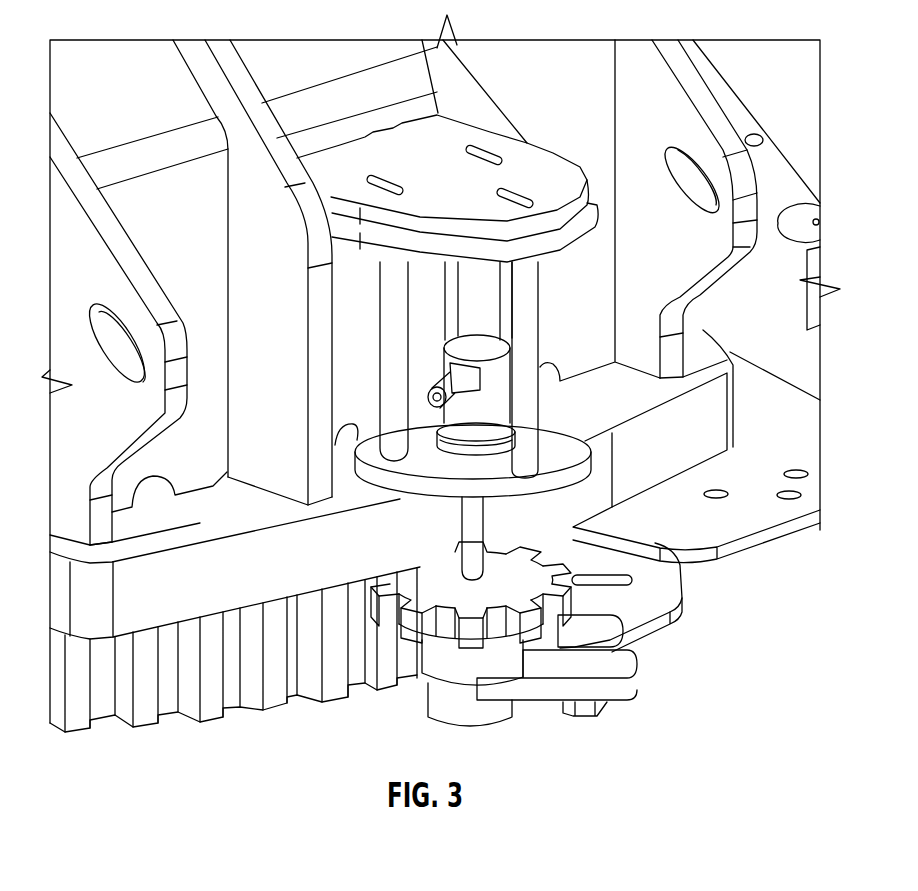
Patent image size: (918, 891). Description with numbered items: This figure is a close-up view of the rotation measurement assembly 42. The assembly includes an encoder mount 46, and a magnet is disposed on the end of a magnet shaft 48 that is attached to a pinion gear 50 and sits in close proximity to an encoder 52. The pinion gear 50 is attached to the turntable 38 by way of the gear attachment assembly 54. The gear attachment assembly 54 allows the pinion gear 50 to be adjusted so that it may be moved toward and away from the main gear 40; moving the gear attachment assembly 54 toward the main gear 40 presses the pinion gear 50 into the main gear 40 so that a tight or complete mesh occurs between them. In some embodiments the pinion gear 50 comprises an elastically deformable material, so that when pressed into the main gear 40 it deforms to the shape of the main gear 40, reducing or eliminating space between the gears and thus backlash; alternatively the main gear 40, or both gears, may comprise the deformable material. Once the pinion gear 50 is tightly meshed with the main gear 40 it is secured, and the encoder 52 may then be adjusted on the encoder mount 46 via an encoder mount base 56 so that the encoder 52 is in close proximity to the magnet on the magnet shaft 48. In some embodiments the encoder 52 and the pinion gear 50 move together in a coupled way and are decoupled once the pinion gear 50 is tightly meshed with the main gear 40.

The turntable 38 is at (172, 518).
The main gear 40 is at (210, 710).
The rotation measurement assembly 42 is at (594, 471).
The encoder mount 46 is at (527, 308).
The magnet shaft 48 is at (483, 530).
The pinion gear 50 is at (430, 587).
The encoder 52 is at (407, 337).
The gear attachment assembly 54 is at (657, 645).
The encoder mount base 56 is at (567, 427).